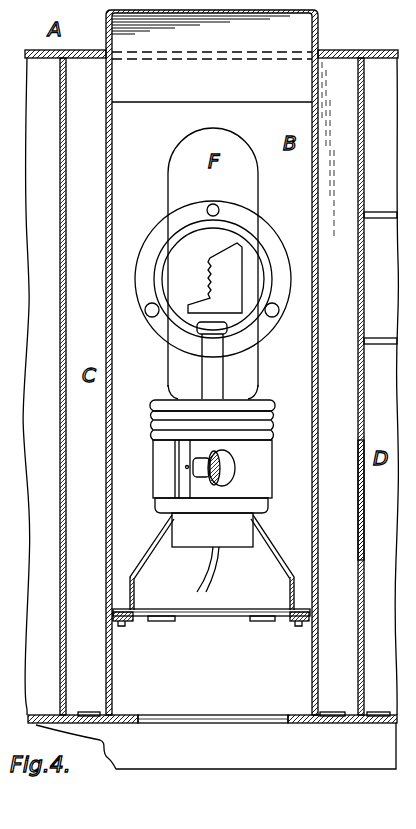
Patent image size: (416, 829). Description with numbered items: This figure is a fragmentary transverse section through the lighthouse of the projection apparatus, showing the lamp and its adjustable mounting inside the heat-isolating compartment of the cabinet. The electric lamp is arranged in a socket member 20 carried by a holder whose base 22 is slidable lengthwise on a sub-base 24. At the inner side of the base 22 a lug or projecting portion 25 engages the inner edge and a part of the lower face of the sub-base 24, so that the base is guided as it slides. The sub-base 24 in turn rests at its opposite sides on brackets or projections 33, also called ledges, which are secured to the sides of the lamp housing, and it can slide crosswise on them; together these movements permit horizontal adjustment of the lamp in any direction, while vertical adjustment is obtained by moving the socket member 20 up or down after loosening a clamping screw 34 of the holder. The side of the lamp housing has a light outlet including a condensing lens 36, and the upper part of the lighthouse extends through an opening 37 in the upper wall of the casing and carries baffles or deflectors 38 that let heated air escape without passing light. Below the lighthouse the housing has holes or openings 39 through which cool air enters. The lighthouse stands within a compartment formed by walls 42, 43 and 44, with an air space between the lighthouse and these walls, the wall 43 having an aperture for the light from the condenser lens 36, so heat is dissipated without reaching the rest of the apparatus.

The socket member 20 is at (212, 530).
The base 22 is at (287, 610).
The sub-base 24 is at (284, 622).
The lug or projecting portion 25 is at (257, 621).
The brackets or projections 33 is at (124, 624).
The clamping screw 34 is at (228, 470).
The condensing lens 36 is at (165, 268).
The opening 37 is at (343, 50).
The baffles or deflectors 38 is at (212, 362).
The holes or openings 39 is at (234, 722).
The wall 42 is at (61, 459).
The wall 43 is at (348, 505).
The wall 44 is at (360, 398).